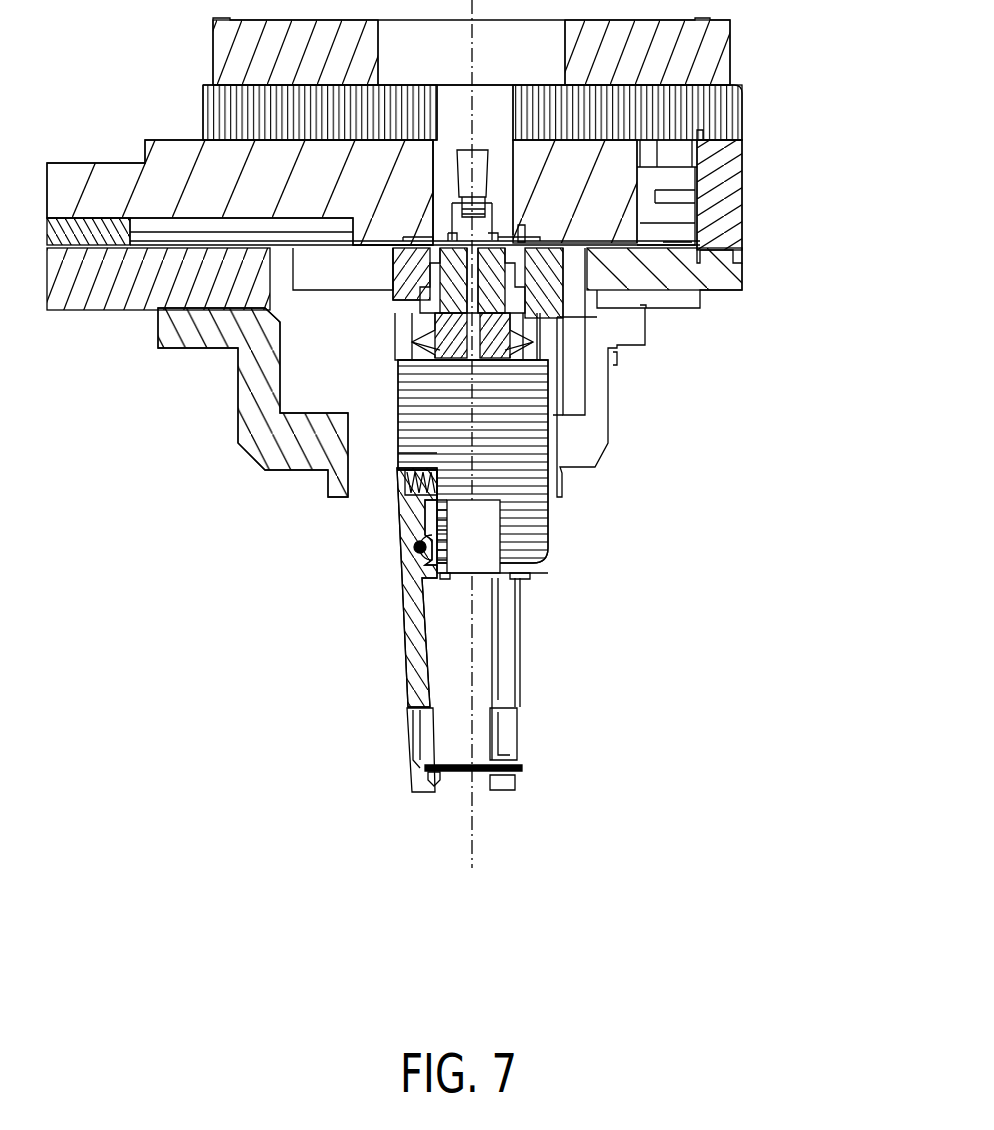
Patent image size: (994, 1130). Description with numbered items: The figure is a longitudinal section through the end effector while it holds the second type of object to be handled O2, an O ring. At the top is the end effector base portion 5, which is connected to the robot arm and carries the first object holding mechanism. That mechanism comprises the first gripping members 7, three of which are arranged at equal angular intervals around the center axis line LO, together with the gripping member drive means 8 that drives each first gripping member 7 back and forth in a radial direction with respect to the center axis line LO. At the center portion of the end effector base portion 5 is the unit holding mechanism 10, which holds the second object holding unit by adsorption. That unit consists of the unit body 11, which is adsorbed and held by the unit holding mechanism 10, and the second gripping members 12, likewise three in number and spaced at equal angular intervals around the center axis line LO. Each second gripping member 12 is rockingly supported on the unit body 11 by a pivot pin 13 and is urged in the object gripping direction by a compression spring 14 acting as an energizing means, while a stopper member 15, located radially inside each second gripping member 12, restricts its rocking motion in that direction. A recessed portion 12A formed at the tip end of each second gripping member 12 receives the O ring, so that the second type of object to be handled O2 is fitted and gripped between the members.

The end effector base portion 5 is at (723, 52).
The gripping member drive means 8 is at (120, 173).
The first gripping member 7 is at (255, 450).
The unit holding mechanism 10 is at (400, 363).
The unit body 11 is at (540, 507).
The compression spring 14 is at (410, 485).
The pivot pin 13 is at (415, 550).
The stopper member 15 is at (412, 575).
The second gripping member 12 is at (408, 757).
The recessed portion 12A is at (443, 777).
The second type of object to be handled O2 is at (463, 773).
The center axis line LO is at (475, 862).